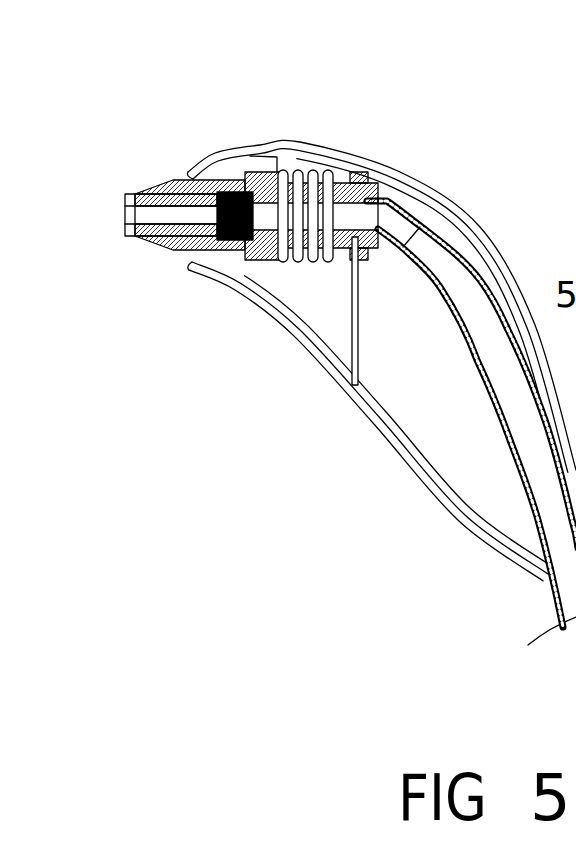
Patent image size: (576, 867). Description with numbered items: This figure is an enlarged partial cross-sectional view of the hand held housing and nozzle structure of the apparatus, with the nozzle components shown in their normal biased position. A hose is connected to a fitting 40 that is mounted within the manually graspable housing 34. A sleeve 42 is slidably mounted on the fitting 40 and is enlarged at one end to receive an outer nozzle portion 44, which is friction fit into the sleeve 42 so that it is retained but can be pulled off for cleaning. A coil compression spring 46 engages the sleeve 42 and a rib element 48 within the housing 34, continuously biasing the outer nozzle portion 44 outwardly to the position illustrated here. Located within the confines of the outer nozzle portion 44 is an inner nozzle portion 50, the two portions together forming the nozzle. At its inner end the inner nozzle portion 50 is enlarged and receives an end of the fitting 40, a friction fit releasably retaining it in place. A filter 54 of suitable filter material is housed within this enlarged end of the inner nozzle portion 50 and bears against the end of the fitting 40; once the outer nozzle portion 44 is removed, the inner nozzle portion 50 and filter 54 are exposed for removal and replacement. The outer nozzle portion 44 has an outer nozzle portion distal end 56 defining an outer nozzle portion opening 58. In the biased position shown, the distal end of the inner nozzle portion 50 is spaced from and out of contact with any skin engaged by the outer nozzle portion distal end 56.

The housing 34 is at (440, 203).
The fitting 40 is at (385, 197).
The sleeve 42 is at (263, 262).
The outer nozzle portion 44 is at (212, 192).
The coil compression spring 46 is at (316, 170).
The rib element 48 is at (360, 333).
The inner nozzle portion 50 is at (157, 234).
The filter 54 is at (230, 241).
The outer nozzle portion distal end 56 is at (141, 191).
The outer nozzle portion opening 58 is at (128, 212).